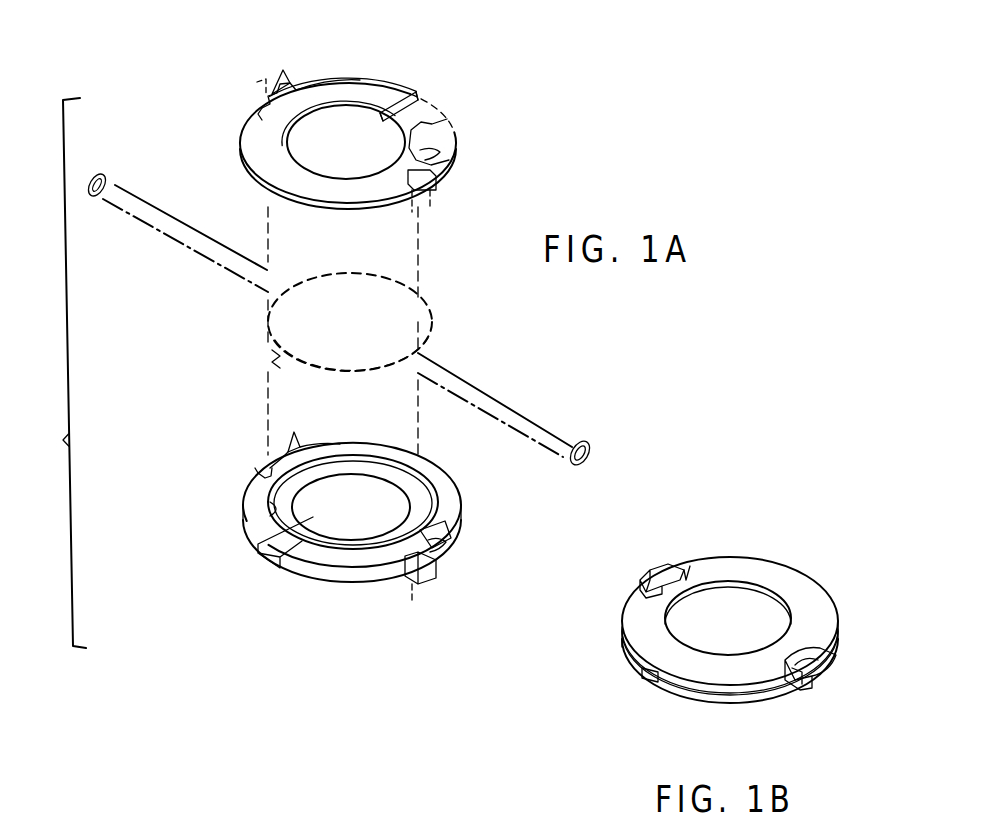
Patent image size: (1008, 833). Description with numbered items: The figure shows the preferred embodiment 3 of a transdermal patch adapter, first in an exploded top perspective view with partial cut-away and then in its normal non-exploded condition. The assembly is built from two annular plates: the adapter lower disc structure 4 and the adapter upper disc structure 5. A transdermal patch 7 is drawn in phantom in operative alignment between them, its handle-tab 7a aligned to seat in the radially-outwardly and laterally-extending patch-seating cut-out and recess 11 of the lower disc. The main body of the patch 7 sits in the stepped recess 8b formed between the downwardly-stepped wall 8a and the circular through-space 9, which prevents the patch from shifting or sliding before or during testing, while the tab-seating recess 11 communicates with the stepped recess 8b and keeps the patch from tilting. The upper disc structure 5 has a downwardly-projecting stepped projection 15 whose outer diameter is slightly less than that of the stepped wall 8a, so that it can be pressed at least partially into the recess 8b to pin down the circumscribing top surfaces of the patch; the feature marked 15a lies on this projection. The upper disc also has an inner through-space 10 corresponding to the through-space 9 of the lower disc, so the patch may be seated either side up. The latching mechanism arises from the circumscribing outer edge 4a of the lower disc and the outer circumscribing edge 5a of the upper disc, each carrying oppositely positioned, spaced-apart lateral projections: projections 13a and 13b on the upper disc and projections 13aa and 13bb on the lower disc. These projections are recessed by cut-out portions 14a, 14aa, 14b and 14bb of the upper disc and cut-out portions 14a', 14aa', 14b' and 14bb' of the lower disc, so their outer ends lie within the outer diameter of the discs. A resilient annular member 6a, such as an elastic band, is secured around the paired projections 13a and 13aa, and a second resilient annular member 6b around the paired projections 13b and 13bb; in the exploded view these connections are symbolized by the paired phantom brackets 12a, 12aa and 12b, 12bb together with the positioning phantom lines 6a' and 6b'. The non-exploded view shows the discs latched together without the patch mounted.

In FIG. 1A, the embodiment 3 is at (63, 440).
In FIG. 1B, the embodiment 3 is at (596, 665).
In FIG. 1A, the adapter lower disc structure 4 is at (243, 564).
In FIG. 1B, the adapter lower disc structure 4 is at (630, 667).
In FIG. 1A, the circumscribing outer edge 4a is at (290, 567).
In FIG. 1B, the circumscribing outer edge 4a is at (704, 700).
In FIG. 1A, the adapter upper disc structure 5 is at (232, 146).
In FIG. 1B, the adapter upper disc structure 5 is at (822, 628).
In FIG. 1A, the outer circumscribing outer edge 5a is at (262, 173).
In FIG. 1B, the outer circumscribing outer edge 5a is at (680, 686).
In FIG. 1A, the resilient annular member 6a is at (95, 227).
In FIG. 1B, the resilient annular member 6a is at (718, 549).
In FIG. 1A, the symbolic positioning phantom line 6a' is at (185, 238).
In FIG. 1A, the resilient annular member 6b is at (613, 429).
In FIG. 1A, the symbolic positioning phantom line 6b' is at (495, 405).
In FIG. 1A, the transdermal patch 7 is at (437, 296).
In FIG. 1A, the handle-tab 7a is at (266, 352).
In FIG. 1A, the downwardly-stepped wall 8a is at (270, 509).
In FIG. 1A, the stepped recess 8b is at (402, 474).
In FIG. 1A, the circular through-space 9 is at (372, 527).
In FIG. 1B, the circular through-space 9 is at (740, 612).
In FIG. 1A, the inner space 10 is at (382, 103).
In FIG. 1B, the inner space 10 is at (752, 572).
In FIG. 1A, the transdermal patch-seating cut-out and recess 11 is at (297, 531).
In FIG. 1B, the transdermal patch-seating cut-out and recess 11 is at (645, 677).
In FIG. 1A, the phantom bracket 12a is at (280, 72).
In FIG. 1A, the phantom bracket 12aa is at (272, 450).
In FIG. 1A, the phantom bracket 12b is at (440, 138).
In FIG. 1A, the phantom bracket 12bb is at (436, 576).
In FIG. 1A, the lateral projection 13a is at (288, 88).
In FIG. 1B, the lateral projection 13a is at (658, 568).
In FIG. 1A, the lateral projection 13aa is at (292, 445).
In FIG. 1A, the lateral projection 13b is at (437, 186).
In FIG. 1B, the lateral projection 13b is at (822, 672).
In FIG. 1A, the lateral projection 13bb is at (447, 514).
In FIG. 1B, the lateral projection 13bb is at (802, 690).
In FIG. 1A, the cut-out portion 14a is at (265, 138).
In FIG. 1A, the cut-out portion 14a' is at (211, 485).
In FIG. 1A, the cut-out portion 14aa is at (354, 69).
In FIG. 1A, the cut-out portion 14aa' is at (349, 428).
In FIG. 1A, the cut-out portion 14b is at (380, 226).
In FIG. 1A, the cut-out portion 14b' is at (427, 616).
In FIG. 1A, the cut-out portion 14bb is at (482, 158).
In FIG. 1A, the cut-out portion 14bb' is at (496, 535).
In FIG. 1A, the downwardly-projecting stepped projection 15 is at (416, 102).
In FIG. 1A, the inner face of step 15a is at (390, 106).